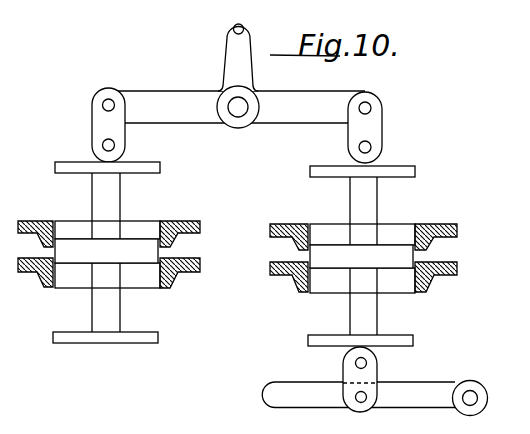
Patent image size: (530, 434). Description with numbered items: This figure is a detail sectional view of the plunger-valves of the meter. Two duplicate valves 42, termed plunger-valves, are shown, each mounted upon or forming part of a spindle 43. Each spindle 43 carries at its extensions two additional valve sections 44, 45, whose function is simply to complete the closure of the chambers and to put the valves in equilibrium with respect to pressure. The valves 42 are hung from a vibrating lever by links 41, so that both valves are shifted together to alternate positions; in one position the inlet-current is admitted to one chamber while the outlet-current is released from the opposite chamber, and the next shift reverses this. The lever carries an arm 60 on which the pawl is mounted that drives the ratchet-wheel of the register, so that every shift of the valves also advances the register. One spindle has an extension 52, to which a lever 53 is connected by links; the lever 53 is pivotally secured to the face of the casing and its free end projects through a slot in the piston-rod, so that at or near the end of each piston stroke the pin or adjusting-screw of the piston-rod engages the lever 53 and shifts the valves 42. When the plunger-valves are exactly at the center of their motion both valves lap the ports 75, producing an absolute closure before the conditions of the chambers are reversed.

The arm 60 is at (238, 76).
The links 41 is at (365, 127).
The valve section 44 is at (161, 168).
The valve 42 is at (234, 253).
The ports 75 is at (161, 256).
The valve section 45 is at (159, 338).
The spindle 43 is at (363, 256).
The extension 52 is at (378, 350).
The lever 53 is at (374, 398).